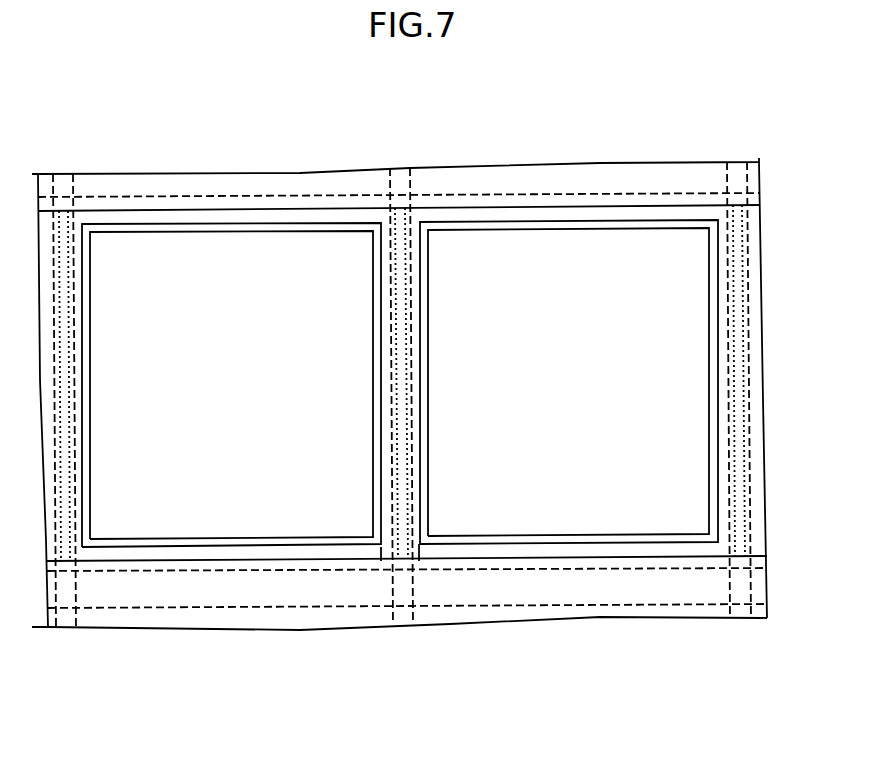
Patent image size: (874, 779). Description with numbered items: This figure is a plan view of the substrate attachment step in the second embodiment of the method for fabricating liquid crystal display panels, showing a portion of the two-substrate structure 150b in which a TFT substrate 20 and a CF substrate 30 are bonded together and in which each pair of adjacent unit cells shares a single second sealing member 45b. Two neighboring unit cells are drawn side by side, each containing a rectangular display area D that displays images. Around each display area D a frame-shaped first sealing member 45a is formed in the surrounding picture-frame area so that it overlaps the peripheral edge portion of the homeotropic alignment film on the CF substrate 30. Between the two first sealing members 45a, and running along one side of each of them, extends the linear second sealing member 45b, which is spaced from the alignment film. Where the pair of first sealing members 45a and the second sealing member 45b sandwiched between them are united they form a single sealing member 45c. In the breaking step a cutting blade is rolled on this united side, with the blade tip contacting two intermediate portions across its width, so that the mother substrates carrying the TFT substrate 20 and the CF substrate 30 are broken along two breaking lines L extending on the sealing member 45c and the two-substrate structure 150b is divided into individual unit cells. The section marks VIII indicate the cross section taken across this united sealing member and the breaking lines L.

The TFT substrate 20 is at (675, 603).
The CF substrate 30 is at (685, 567).
The two-substrate structure 150b is at (71, 150).
The breaking line L is at (412, 181).
The first sealing member 45a is at (380, 552).
The second sealing member 45b is at (402, 552).
The sealing member 45c is at (408, 472).
The display area D is at (242, 396).
The section line VIII is at (361, 375).